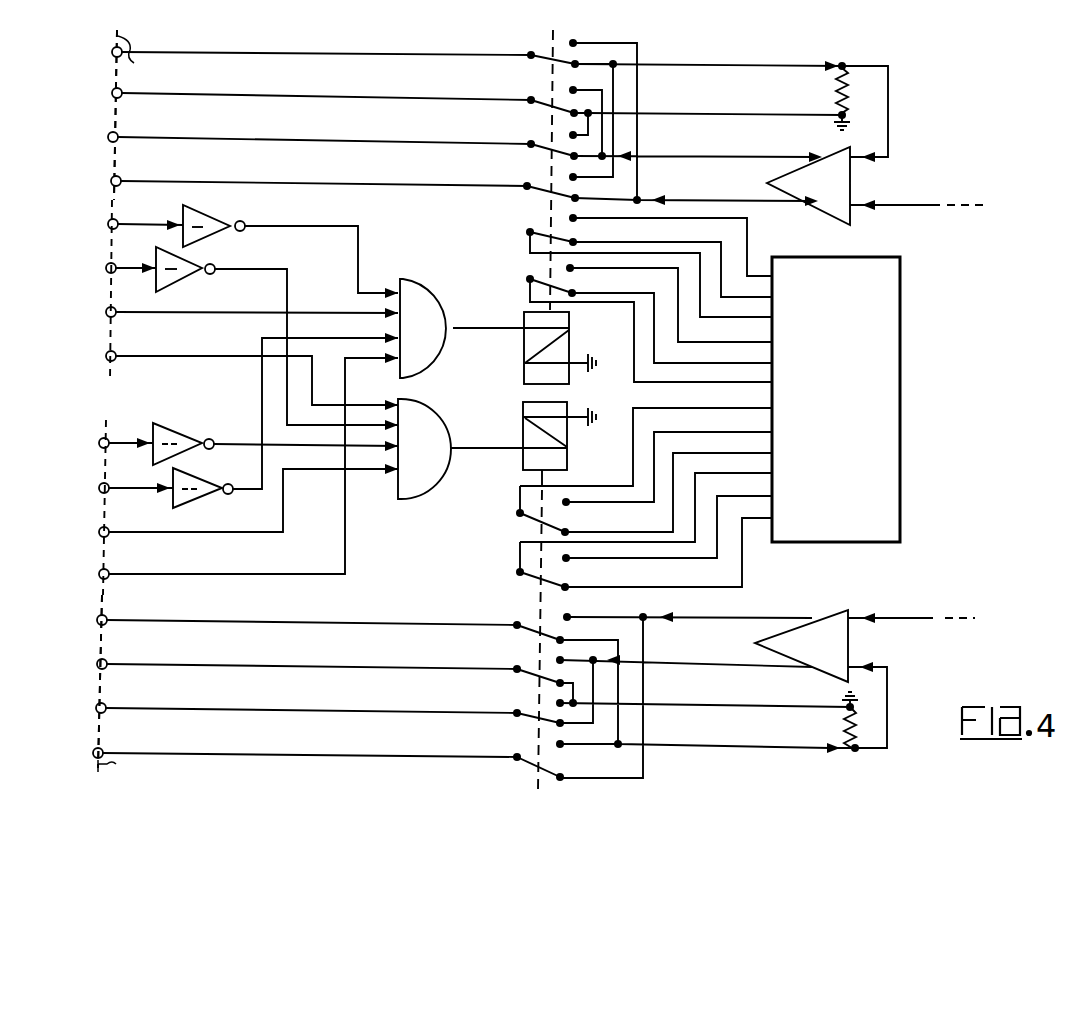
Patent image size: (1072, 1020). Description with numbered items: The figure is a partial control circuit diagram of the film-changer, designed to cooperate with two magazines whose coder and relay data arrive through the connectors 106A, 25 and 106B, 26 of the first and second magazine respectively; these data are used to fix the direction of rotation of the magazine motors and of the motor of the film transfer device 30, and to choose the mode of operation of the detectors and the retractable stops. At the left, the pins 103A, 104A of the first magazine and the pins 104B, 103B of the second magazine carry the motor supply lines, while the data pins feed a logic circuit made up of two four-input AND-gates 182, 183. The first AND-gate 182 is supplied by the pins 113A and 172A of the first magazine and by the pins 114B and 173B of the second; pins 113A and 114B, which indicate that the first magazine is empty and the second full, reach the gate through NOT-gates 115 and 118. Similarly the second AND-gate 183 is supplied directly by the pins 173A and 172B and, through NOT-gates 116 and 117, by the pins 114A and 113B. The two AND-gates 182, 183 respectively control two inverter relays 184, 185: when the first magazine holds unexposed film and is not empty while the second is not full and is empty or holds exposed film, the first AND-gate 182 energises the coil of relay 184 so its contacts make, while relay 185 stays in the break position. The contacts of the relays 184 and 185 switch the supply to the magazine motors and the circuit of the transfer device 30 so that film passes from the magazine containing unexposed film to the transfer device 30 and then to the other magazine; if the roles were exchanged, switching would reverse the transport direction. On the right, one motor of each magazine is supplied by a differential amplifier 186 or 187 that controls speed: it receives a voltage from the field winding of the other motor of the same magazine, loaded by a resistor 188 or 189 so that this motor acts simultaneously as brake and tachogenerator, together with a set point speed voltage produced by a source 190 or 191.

The film transfer device 30 is at (882, 397).
The pins of the first magazine 103A is at (112, 53).
The pins of the first magazine 104A is at (110, 141).
The connector of the first magazine 106A is at (175, 115).
The first magazine 25 is at (115, 115).
The pin indicating first magazine empty 113A is at (117, 223).
The pin indicating first magazine full 114A is at (104, 269).
The pin indicating first magazine contains unexposed film 172A is at (225, 313).
The pin indicating first magazine contains exposed film 173A is at (225, 378).
The pin indicating second magazine empty 113B is at (101, 443).
The pin indicating second magazine full 114B is at (111, 488).
The pin indicating second magazine contains unexposed film 172B is at (224, 503).
The pin indicating second magazine contains exposed film 173B is at (224, 469).
The pins of the second magazine 104B is at (98, 626).
The pins of the second magazine 103B is at (97, 714).
The connector of the second magazine 106B is at (159, 688).
The second magazine 26 is at (100, 681).
The NOT-gate 115 is at (210, 214).
The NOT-gate 116 is at (192, 260).
The NOT-gate 117 is at (178, 432).
The NOT-gate 118 is at (200, 478).
The first AND-gate 182 is at (440, 296).
The second AND-gate 183 is at (438, 475).
The inverter relay 184 is at (570, 347).
The inverter relay 185 is at (567, 437).
The differential amplifier 186 is at (852, 180).
The differential amplifier 187 is at (850, 640).
The resistor 188 is at (828, 97).
The resistor 189 is at (838, 733).
The set point speed source 190 is at (973, 214).
The set point speed source 191 is at (973, 618).